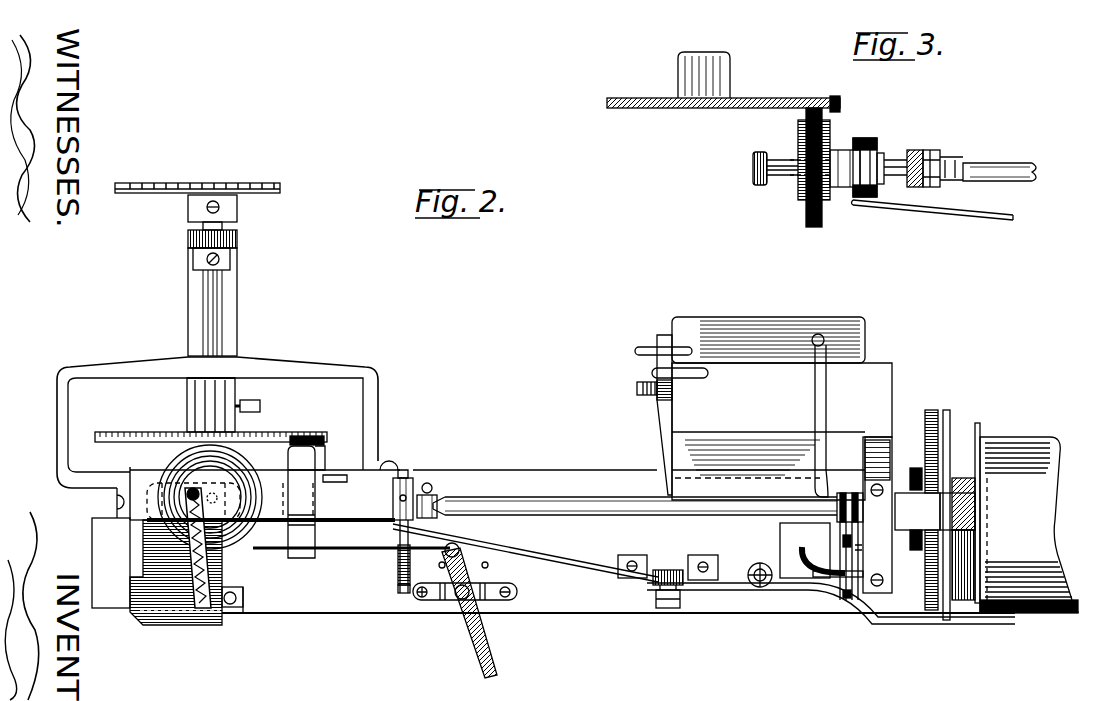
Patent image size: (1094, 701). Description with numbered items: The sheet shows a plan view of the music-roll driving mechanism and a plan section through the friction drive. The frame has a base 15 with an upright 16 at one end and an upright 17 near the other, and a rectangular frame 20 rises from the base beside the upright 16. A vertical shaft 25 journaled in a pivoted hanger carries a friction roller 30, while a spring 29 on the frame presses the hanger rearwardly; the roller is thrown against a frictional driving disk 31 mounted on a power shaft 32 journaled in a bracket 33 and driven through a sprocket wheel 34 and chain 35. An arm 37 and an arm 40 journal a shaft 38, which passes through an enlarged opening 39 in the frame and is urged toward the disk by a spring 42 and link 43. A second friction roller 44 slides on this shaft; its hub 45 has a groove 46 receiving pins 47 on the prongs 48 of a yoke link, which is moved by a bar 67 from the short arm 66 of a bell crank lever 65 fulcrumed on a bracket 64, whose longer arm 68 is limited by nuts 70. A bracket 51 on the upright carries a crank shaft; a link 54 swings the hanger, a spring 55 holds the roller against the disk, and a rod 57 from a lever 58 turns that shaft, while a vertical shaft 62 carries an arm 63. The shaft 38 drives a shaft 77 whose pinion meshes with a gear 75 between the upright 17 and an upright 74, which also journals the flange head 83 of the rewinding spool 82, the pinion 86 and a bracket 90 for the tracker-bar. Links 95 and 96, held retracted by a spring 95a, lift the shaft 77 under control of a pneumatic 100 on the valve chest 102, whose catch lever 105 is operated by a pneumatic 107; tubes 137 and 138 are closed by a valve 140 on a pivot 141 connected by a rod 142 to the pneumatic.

In FIG. 2, the base 15 is at (263, 614).
In FIG. 2, the upright 16 is at (112, 600).
In FIG. 2, the upright 17 is at (898, 480).
In FIG. 2, the rectangular frame 20 is at (328, 560).
In FIG. 3, the rectangular frame 20 is at (915, 188).
In FIG. 2, the vertical shaft 25 is at (223, 503).
In FIG. 2, the spring 29 is at (304, 560).
In FIG. 2, the friction roller 30 is at (166, 461).
In FIG. 2, the frictional driving disk 31 is at (130, 432).
In FIG. 3, the frictional driving disk 31 is at (757, 112).
In FIG. 2, the power shaft 32 is at (192, 284).
In FIG. 2, the bracket 33 is at (190, 262).
In FIG. 2, the sprocket wheel 34 is at (142, 198).
In FIG. 2, the sprocket chain 35 is at (124, 194).
In FIG. 3, the arm 37 is at (754, 160).
In FIG. 2, the shaft 38 is at (431, 488).
In FIG. 3, the shaft 38 is at (790, 178).
In FIG. 3, the enlarged opening 39 is at (917, 150).
In FIG. 3, the arm 40 is at (933, 188).
In FIG. 2, the spring 42 is at (398, 595).
In FIG. 2, the link 43 is at (403, 476).
In FIG. 2, the friction roller 44 is at (314, 452).
In FIG. 3, the friction roller 44 is at (810, 190).
In FIG. 3, the hub 45 is at (840, 150).
In FIG. 3, the groove 46 is at (882, 153).
In FIG. 3, the pins 47 is at (866, 140).
In FIG. 3, the prongs 48 is at (853, 203).
In FIG. 2, the bracket 51 is at (196, 626).
In FIG. 2, the link 54 is at (193, 584).
In FIG. 2, the spring 55 is at (233, 607).
In FIG. 2, the rod 57 is at (353, 560).
In FIG. 2, the lever 58 is at (470, 622).
In FIG. 2, the shaft 62 is at (790, 556).
In FIG. 2, the arm 63 is at (834, 590).
In FIG. 2, the bracket 64 is at (702, 580).
In FIG. 2, the bell crank lever 65 is at (648, 590).
In FIG. 2, the short arm 66 is at (656, 602).
In FIG. 2, the bar 67 is at (600, 575).
In FIG. 3, the bar 67 is at (975, 217).
In FIG. 2, the longer arm 68 is at (722, 592).
In FIG. 2, the nuts 70 is at (751, 588).
In FIG. 2, the upright 74 is at (951, 418).
In FIG. 2, the gear 75 is at (936, 412).
In FIG. 2, the shaft 77 is at (490, 497).
In FIG. 3, the shaft 77 is at (993, 163).
In FIG. 2, the supply or rewinding spool 82 is at (1036, 618).
In FIG. 2, the flange head 83 is at (975, 508).
In FIG. 2, the pinion 86 is at (930, 444).
In FIG. 2, the bracket 90 is at (956, 620).
In FIG. 2, the link 95 is at (890, 560).
In FIG. 2, the spring 95a is at (853, 525).
In FIG. 2, the link 96 is at (858, 546).
In FIG. 2, the pneumatic 100 is at (690, 478).
In FIG. 2, the pneumatic valve chest 102 is at (892, 367).
In FIG. 2, the catch lever 105 is at (827, 388).
In FIG. 2, the pneumatic 107 is at (866, 340).
In FIG. 2, the tube 137 is at (651, 347).
In FIG. 2, the tube 138 is at (658, 380).
In FIG. 2, the valve 140 is at (653, 372).
In FIG. 2, the pivot 141 is at (637, 388).
In FIG. 2, the rod 142 is at (658, 420).